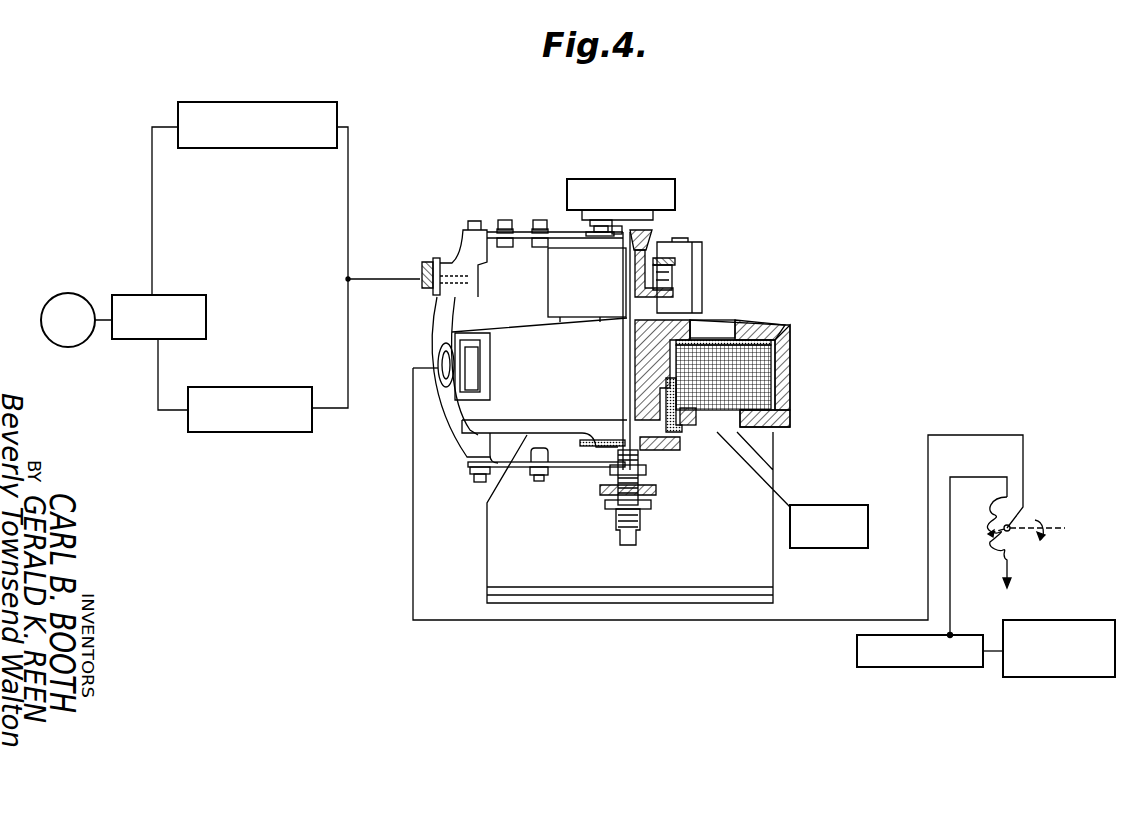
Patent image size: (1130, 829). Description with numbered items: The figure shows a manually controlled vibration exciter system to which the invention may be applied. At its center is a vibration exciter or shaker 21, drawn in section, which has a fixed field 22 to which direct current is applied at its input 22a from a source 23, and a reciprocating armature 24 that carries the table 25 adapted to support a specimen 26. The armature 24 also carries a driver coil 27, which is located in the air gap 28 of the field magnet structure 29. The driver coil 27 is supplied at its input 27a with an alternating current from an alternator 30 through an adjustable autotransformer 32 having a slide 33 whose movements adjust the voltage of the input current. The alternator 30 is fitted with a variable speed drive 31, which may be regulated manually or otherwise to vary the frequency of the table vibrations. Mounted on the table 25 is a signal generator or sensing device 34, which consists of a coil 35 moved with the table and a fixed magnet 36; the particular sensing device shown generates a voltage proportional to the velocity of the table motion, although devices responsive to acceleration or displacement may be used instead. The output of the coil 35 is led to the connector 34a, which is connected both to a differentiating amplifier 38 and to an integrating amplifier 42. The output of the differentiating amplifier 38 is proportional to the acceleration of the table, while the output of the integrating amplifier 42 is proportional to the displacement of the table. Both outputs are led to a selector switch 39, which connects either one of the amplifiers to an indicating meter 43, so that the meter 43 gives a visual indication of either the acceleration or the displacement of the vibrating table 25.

The vibration exciter 21 is at (788, 330).
The fixed field 22 is at (775, 368).
The input 22a is at (778, 428).
The source 23 is at (848, 505).
The reciprocating armature 24 is at (630, 349).
The table 25 is at (650, 242).
The specimen 26 is at (622, 165).
The driver coil 27 is at (677, 435).
The input 27a is at (438, 364).
The air gap 28 is at (687, 427).
The field magnet structure 29 is at (655, 440).
The alternator 30 is at (906, 667).
The variable speed drive 31 is at (1055, 678).
The adjustable autotransformer 32 is at (987, 560).
The slide 33 is at (1002, 534).
The sensing device 34 is at (660, 265).
The connector 34a is at (420, 275).
The coil 35 is at (698, 262).
The fixed magnet 36 is at (636, 300).
The differentiating amplifier 38 is at (280, 92).
The selector switch 39 is at (186, 295).
The integrating amplifier 42 is at (284, 387).
The indicating meter 43 is at (63, 348).